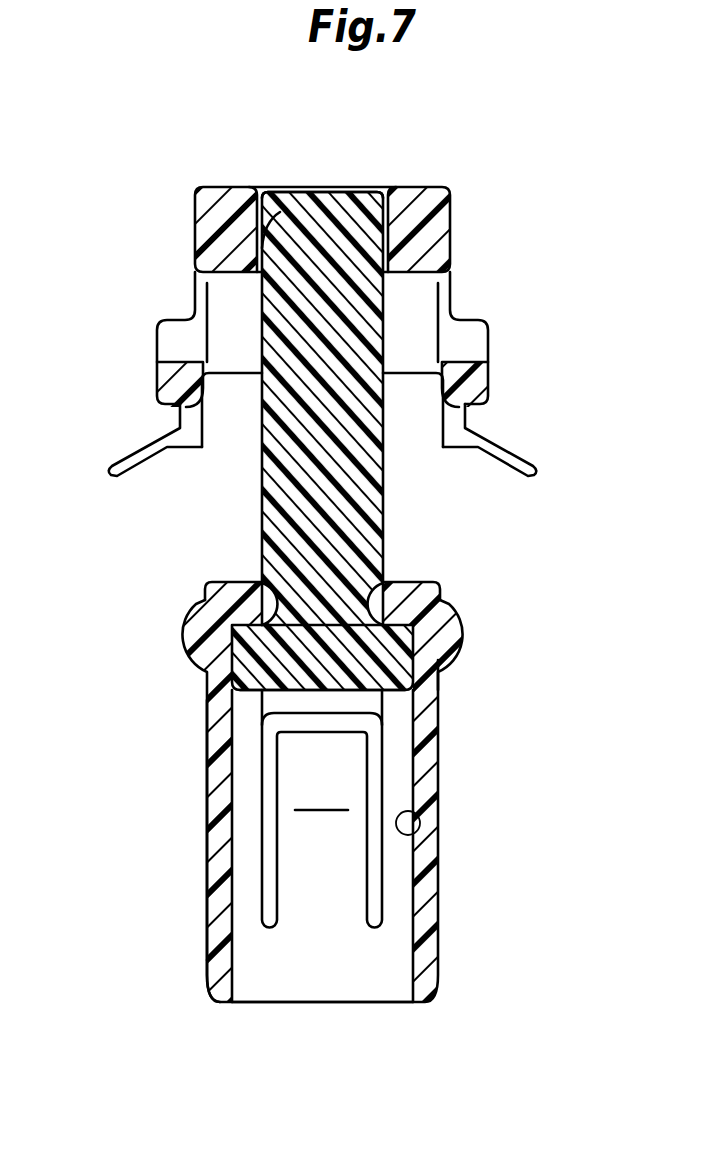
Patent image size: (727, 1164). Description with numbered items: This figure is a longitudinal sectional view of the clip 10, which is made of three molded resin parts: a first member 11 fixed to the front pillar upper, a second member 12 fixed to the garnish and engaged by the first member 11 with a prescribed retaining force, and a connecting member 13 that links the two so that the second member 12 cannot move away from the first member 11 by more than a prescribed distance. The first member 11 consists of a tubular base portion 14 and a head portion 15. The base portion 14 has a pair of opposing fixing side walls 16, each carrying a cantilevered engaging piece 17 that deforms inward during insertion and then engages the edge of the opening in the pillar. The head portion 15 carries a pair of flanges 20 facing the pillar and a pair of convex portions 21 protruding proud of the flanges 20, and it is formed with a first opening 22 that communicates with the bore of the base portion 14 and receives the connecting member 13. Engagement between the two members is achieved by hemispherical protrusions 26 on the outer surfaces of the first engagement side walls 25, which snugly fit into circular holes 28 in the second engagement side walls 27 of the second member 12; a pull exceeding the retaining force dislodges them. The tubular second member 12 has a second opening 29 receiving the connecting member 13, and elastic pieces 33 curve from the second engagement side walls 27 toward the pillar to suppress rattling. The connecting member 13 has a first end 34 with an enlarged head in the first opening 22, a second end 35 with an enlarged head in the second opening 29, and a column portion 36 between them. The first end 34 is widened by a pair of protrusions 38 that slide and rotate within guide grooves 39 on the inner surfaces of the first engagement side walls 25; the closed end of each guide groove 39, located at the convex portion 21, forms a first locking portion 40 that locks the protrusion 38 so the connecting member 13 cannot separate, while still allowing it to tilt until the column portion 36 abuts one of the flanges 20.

The clip 10 is at (488, 120).
The first member 11 is at (442, 992).
The second member 12 is at (458, 240).
The connecting member 13 is at (407, 498).
The base portion 14 is at (207, 963).
The head portion 15 is at (110, 597).
The fixing side wall 16 is at (352, 993).
The engaging piece 17 is at (279, 902).
The flange 20 is at (207, 698).
The convex portion 21 is at (195, 623).
The first opening 22 is at (277, 597).
The first engagement side wall 25 is at (207, 857).
The hemispherical protrusion 26 is at (455, 640).
The second engagement side wall 27 is at (195, 232).
The circular hole 28 is at (480, 357).
The second opening 29 is at (281, 228).
The elastic piece 33 is at (112, 464).
The first end 34 is at (333, 688).
The second end 35 is at (327, 195).
The column portion 36 is at (358, 453).
The protrusion 38 is at (437, 667).
The guide groove 39 is at (418, 832).
The first locking portion 40 is at (402, 600).